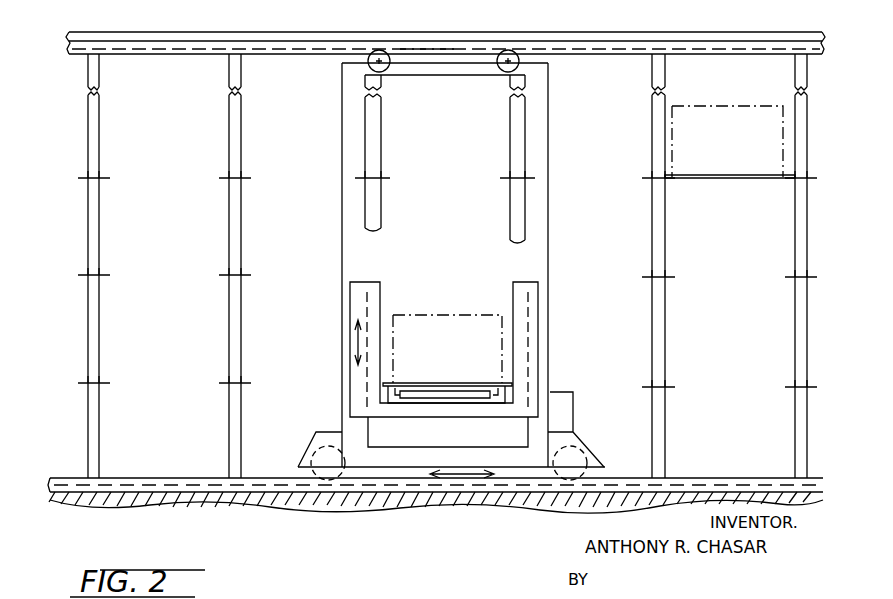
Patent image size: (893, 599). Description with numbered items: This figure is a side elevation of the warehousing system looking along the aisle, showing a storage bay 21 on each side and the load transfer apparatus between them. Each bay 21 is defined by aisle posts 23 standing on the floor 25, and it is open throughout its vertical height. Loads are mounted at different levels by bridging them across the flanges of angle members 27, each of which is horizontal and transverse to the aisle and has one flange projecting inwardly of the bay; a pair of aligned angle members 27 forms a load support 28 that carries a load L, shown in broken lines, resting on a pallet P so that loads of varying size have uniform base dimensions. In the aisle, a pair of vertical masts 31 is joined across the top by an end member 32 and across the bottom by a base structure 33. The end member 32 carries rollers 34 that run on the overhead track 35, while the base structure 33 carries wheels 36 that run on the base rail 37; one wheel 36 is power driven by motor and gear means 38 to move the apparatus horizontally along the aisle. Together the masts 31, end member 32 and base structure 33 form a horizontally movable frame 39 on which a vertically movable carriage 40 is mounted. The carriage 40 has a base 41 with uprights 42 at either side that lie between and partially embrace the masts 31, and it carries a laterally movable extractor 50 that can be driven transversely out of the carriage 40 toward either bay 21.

The storage bay 21 is at (148, 75).
The aisle post 23 is at (243, 240).
The floor 25 is at (103, 497).
The angle member 27 is at (222, 180).
The load support 28 is at (224, 275).
The vertical mast 31 is at (352, 190).
The end member 32 is at (456, 72).
The base structure 33 is at (489, 462).
The roller 34 is at (496, 58).
The overhead track 35 is at (425, 49).
The wheel 36 is at (350, 481).
The base rail 37 is at (252, 478).
The motor and gear means 38 is at (566, 395).
The horizontally movable frame 39 is at (340, 66).
The carriage 40 is at (352, 387).
The base 41 is at (433, 408).
The upright 42 is at (352, 305).
The extractor 50 is at (439, 370).
The pallet P is at (470, 383).
The load L is at (452, 314).